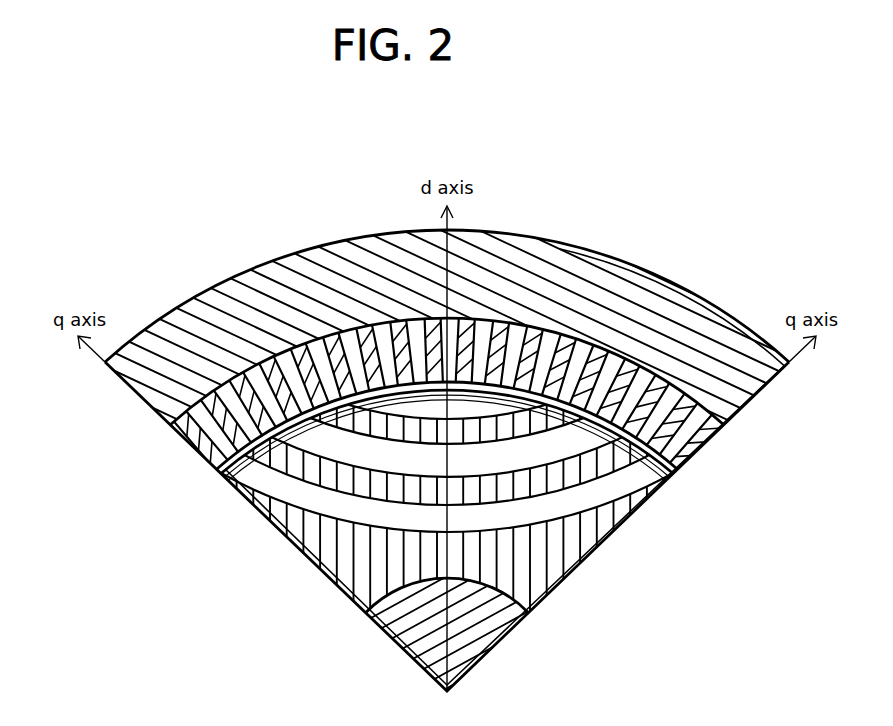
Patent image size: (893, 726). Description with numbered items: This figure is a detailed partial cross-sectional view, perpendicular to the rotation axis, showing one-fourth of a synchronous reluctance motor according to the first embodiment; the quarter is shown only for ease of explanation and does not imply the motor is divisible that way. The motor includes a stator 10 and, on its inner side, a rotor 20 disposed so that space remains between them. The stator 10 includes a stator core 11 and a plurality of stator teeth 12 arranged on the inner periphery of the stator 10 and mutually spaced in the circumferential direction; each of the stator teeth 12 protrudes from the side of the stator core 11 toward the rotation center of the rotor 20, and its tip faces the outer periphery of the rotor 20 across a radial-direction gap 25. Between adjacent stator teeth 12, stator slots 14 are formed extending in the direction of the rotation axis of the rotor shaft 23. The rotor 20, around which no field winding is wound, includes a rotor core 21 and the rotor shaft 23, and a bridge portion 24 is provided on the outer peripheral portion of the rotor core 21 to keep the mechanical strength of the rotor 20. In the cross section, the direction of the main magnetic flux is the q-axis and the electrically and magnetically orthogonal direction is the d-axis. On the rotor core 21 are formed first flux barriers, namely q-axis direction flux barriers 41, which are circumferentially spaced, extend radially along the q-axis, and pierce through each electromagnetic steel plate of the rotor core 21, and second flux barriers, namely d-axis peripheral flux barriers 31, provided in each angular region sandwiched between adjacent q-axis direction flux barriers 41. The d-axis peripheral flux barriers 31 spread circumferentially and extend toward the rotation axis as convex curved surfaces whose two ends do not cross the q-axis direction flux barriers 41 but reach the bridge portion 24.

The stator 10 is at (439, 363).
The stator core 11 is at (110, 378).
The stator teeth 12 is at (412, 414).
The stator slots 14 is at (215, 452).
The rotor 20 is at (446, 398).
The rotor core 21 is at (470, 402).
The rotor shaft 23 is at (482, 661).
The bridge portion 24 is at (677, 481).
The radial-direction gap 25 is at (688, 478).
The d-axis peripheral flux barriers 31 is at (350, 513).
The q-axis direction flux barriers 41 is at (318, 581).